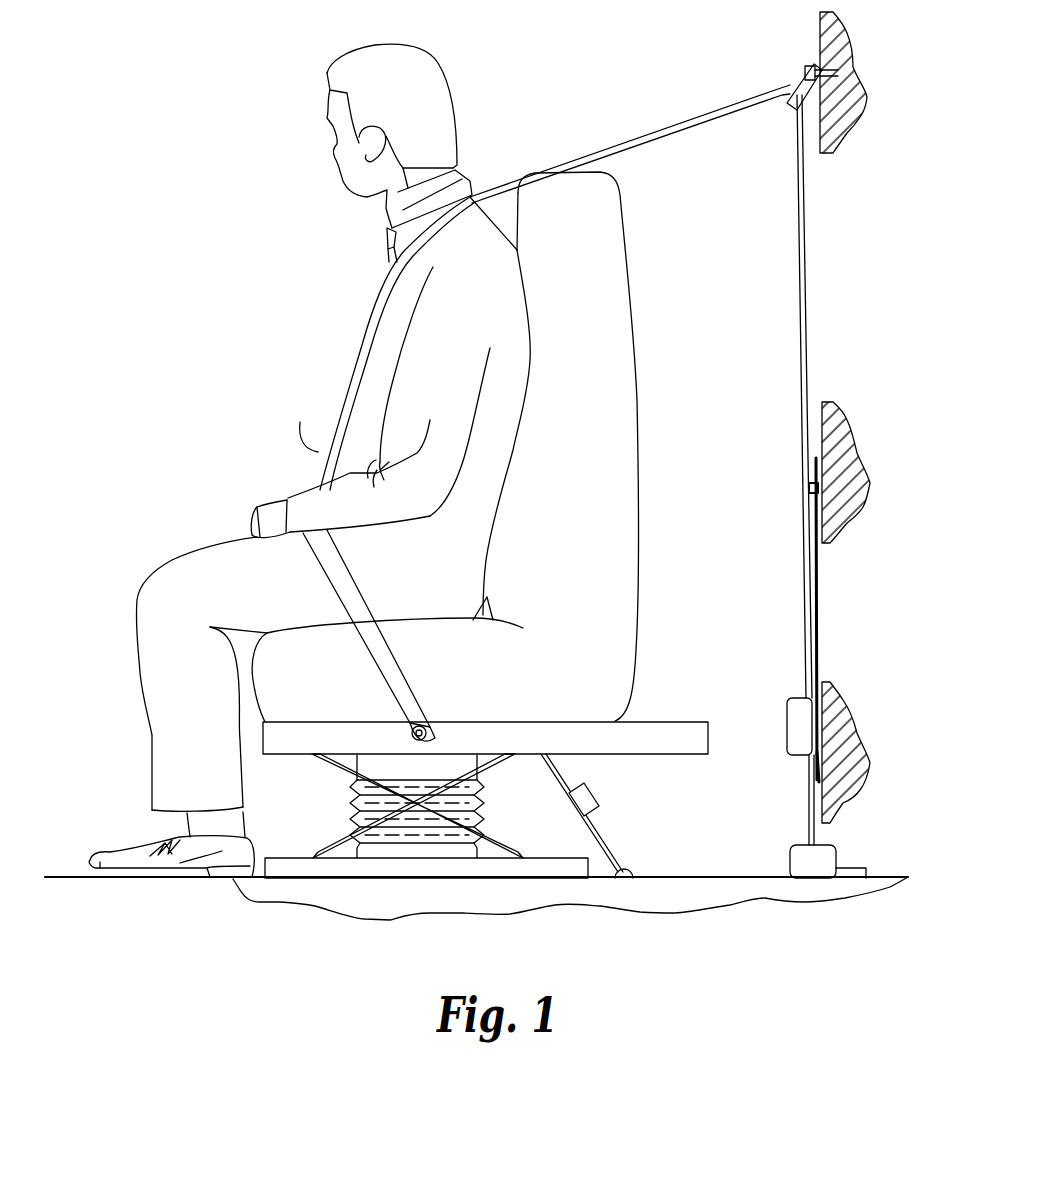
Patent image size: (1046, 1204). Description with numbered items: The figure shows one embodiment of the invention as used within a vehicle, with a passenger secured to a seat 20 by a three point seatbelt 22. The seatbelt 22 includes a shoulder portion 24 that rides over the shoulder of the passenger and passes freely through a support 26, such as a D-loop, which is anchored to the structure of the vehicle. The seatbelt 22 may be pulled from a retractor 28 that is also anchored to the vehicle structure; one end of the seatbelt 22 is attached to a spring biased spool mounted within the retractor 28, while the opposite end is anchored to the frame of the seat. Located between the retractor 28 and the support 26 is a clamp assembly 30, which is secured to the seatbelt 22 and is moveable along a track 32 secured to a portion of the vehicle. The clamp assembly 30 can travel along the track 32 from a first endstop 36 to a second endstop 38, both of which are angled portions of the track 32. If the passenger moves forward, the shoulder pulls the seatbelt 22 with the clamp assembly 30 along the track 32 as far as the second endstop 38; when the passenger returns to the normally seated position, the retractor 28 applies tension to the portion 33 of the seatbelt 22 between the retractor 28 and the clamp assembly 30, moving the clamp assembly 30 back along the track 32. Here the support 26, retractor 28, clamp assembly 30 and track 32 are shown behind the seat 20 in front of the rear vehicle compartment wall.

The seat 20 is at (566, 245).
The seatbelt 22 is at (318, 450).
The shoulder portion 24 is at (641, 128).
The support 26 is at (812, 64).
The retractor 28 is at (800, 858).
The clamp assembly 30 is at (797, 720).
The track 32 is at (820, 620).
The portion 33 is at (808, 835).
The first endstop 36 is at (815, 762).
The second endstop 38 is at (815, 472).